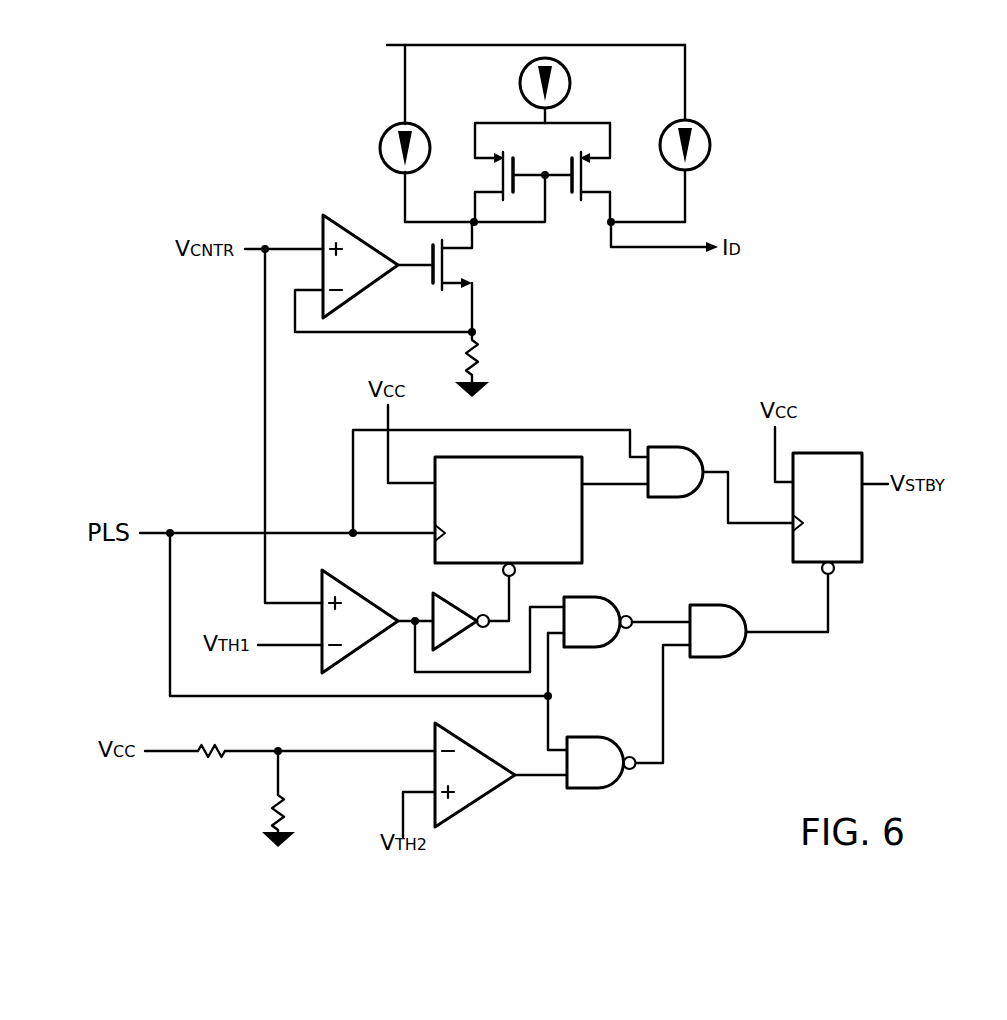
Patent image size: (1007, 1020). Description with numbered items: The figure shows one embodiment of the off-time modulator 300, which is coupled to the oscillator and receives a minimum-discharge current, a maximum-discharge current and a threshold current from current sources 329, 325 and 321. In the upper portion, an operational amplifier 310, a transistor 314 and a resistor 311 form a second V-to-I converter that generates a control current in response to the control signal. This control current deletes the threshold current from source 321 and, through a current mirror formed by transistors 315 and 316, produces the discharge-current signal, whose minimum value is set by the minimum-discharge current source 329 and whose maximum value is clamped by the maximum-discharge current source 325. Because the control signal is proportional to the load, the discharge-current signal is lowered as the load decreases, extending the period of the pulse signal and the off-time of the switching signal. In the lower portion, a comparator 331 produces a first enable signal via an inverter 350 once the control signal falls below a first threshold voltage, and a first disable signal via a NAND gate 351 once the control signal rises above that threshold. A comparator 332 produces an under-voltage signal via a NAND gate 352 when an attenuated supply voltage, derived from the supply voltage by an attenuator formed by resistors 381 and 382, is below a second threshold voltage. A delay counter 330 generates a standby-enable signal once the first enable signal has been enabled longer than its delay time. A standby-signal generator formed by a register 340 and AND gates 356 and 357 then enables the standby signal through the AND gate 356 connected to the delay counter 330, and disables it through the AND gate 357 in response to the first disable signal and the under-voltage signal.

The off-time modulator 300 is at (940, 53).
The operational amplifier 310 is at (368, 297).
The resistor 311 is at (490, 354).
The transistor 314 is at (470, 267).
The transistor 315 is at (483, 173).
The transistor 316 is at (600, 171).
The threshold current source 321 is at (376, 161).
The maximum-discharge current source 325 is at (514, 67).
The minimum-discharge current source 329 is at (714, 163).
The delay counter 330 is at (590, 515).
The comparator 331 is at (340, 660).
The comparator 332 is at (475, 811).
The register 340 is at (832, 451).
The inverter 350 is at (428, 593).
The NAND gate 351 is at (612, 605).
The NAND gate 352 is at (614, 737).
The AND gate 356 is at (660, 441).
The AND gate 357 is at (730, 603).
The resistor 381 is at (213, 768).
The resistor 382 is at (297, 806).